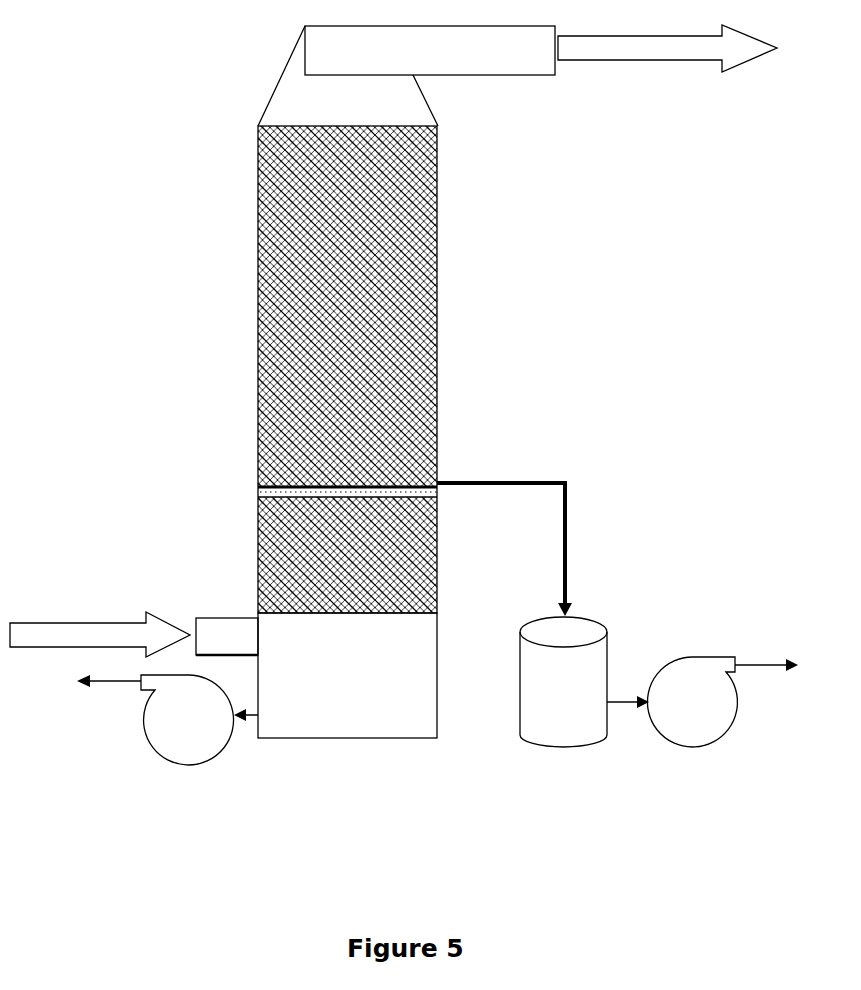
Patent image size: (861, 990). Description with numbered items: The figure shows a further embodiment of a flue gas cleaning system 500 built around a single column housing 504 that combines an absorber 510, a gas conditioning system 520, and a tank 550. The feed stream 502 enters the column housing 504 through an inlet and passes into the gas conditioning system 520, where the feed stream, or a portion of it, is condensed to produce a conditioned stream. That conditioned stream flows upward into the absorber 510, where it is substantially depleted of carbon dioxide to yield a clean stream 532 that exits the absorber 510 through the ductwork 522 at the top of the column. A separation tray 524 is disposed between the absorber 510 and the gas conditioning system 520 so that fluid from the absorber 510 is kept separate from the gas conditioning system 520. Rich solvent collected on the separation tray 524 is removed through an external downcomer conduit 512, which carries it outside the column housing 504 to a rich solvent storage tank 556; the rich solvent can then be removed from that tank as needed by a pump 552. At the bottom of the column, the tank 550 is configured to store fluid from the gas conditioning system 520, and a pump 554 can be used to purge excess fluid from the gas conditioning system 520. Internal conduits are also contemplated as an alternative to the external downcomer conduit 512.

The flue gas cleaning system 500 is at (628, 305).
The feed stream 502 is at (134, 623).
The column housing 504 is at (255, 332).
The absorber 510 is at (347, 306).
The external downcomer conduit 512 is at (550, 470).
The gas conditioning system 520 is at (347, 555).
The ductwork 522 is at (406, 76).
The separation tray 524 is at (296, 482).
The clean stream 532 is at (674, 39).
The tank 550 is at (347, 675).
The pump 552 is at (702, 702).
The pump 554 is at (167, 720).
The rich solvent storage tank 556 is at (612, 630).